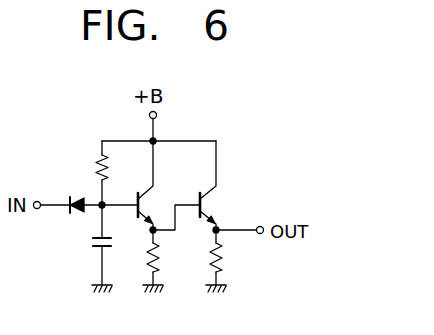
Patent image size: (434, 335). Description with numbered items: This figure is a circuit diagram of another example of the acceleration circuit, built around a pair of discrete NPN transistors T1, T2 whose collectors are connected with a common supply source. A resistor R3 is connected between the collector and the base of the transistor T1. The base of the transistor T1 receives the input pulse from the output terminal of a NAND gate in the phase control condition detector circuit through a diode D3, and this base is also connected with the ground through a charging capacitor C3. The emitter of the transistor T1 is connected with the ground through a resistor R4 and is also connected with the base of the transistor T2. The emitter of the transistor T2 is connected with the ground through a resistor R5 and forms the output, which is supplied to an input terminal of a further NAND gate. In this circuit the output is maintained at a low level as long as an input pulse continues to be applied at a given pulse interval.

The resistor R3 is at (97, 167).
The diode D3 is at (76, 214).
The charging capacitor C3 is at (92, 242).
The NPN transistor T1 is at (147, 203).
The NPN transistor T2 is at (210, 203).
The resistor R4 is at (160, 259).
The resistor R5 is at (223, 259).